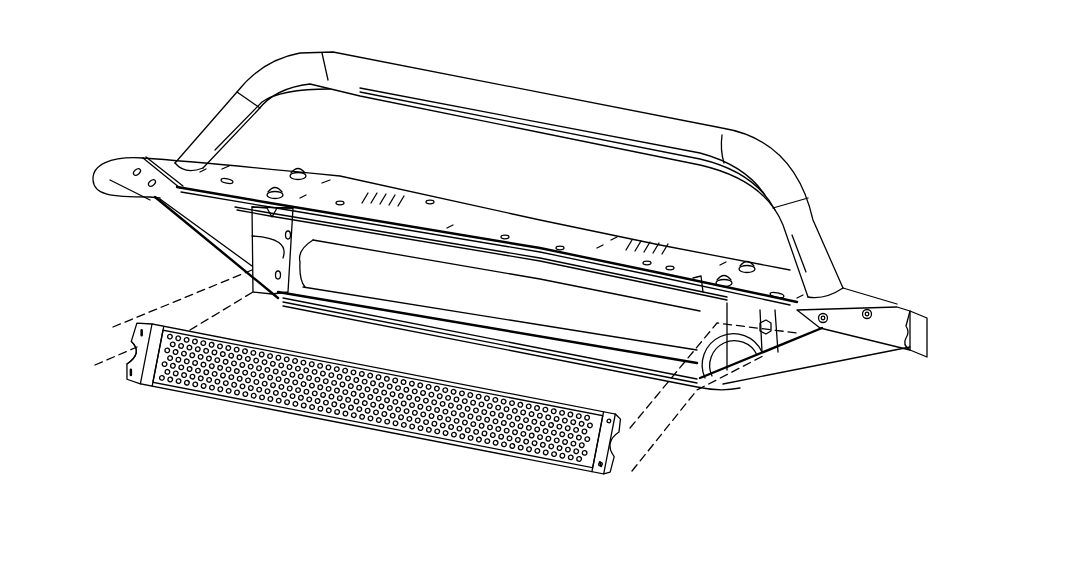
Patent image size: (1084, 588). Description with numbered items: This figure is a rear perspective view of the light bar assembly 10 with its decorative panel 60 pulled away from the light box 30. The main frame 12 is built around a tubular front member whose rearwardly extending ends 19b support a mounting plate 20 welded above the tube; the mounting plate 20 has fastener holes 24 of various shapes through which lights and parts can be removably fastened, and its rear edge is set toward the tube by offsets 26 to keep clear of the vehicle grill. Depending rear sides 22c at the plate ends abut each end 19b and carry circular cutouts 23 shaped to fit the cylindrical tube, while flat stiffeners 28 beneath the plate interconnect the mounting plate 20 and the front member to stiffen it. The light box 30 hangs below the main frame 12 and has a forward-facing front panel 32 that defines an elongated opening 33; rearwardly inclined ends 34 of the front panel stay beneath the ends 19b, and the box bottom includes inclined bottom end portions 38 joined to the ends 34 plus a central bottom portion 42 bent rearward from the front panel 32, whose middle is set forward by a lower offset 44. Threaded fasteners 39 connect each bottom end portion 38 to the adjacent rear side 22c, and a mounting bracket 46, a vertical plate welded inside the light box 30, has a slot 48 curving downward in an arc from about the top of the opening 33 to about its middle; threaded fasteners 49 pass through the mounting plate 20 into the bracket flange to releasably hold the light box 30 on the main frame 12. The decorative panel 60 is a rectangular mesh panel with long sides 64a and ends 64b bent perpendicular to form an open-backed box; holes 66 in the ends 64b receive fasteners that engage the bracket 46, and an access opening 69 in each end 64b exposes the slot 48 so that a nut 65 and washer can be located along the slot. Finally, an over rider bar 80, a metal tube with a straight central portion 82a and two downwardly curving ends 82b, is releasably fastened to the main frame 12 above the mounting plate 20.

The vehicle bumper assembly 10 is at (753, 76).
The main frame 12 is at (680, 247).
The rearwardly extending end of front member 19b is at (108, 177).
The mounting plate 20 is at (389, 186).
The rear side of mounting plate 22c is at (848, 330).
The circular cutout 23 is at (909, 350).
The fastener holes 24 is at (429, 200).
The offset 26 is at (695, 286).
The stiffener 28 is at (470, 262).
The light box 30 is at (731, 393).
The front panel 32 is at (389, 296).
The opening 33 is at (545, 305).
The rearwardly inclined end of front panel 34 is at (237, 226).
The inclined bottom end portion 38 is at (752, 385).
The threaded fastener 39 is at (869, 311).
The central bottom portion 42 is at (356, 306).
The lower offset 44 is at (640, 380).
The mounting bracket 46 is at (252, 266).
The slot 48 is at (705, 382).
The threaded fastener 49 is at (300, 172).
The decorative panel 60 is at (400, 364).
The long side of decorative panel 64a is at (356, 432).
The end of decorative panel 64b is at (137, 340).
The nut 65 is at (770, 334).
The hole 66 is at (618, 431).
The access opening 69 is at (132, 360).
The over rider bar 80 is at (626, 109).
The central portion of over rider bar 82a is at (564, 98).
The end of over rider bar 82b is at (822, 213).